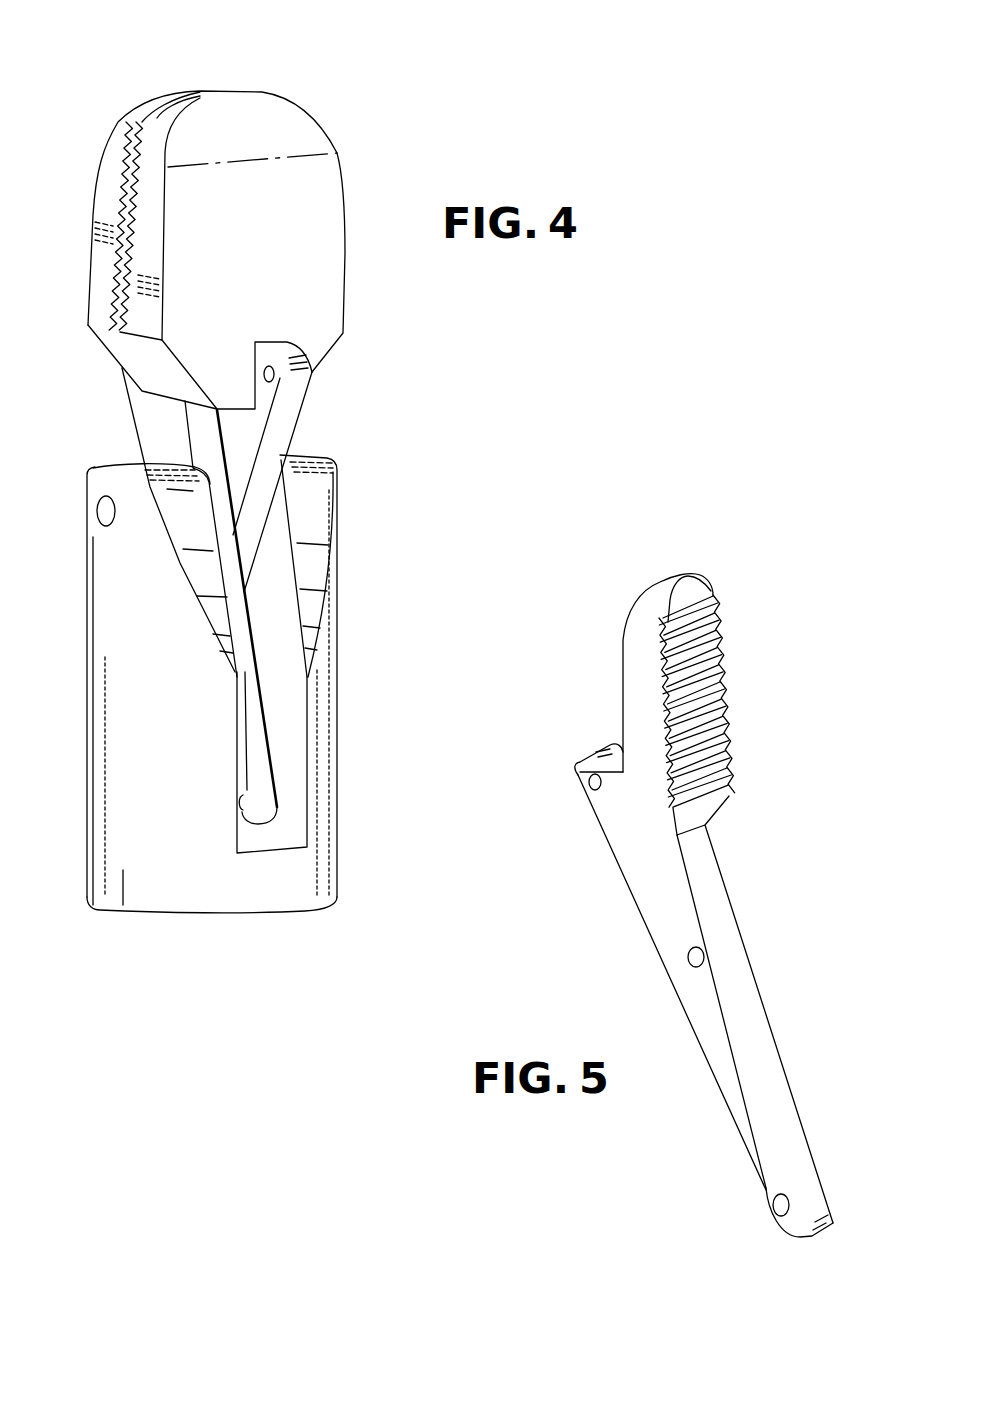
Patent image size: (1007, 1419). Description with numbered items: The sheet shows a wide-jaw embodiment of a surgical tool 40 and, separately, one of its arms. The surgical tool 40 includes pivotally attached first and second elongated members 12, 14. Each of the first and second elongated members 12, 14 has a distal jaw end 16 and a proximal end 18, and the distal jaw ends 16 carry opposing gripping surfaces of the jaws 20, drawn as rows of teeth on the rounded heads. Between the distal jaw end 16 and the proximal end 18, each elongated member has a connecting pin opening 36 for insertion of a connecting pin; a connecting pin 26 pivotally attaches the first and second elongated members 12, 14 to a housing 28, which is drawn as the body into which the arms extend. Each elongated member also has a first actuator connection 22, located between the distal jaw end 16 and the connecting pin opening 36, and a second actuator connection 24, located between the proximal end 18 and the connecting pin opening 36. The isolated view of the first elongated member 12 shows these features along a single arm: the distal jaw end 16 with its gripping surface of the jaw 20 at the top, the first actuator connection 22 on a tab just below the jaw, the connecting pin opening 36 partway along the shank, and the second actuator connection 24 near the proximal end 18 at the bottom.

In FIG. 4, the first elongated member 12 is at (297, 438).
In FIG. 5, the first elongated member 12 is at (630, 904).
In FIG. 4, the second elongated member 14 is at (133, 443).
In FIG. 4, the distal jaw end 16 is at (138, 108).
In FIG. 5, the distal jaw end 16 is at (667, 575).
In FIG. 4, the proximal end 18 is at (253, 820).
In FIG. 5, the proximal end 18 is at (808, 1236).
In FIG. 4, the gripping surface of the jaw 20 is at (124, 186).
In FIG. 5, the gripping surface of the jaw 20 is at (727, 655).
In FIG. 4, the first actuator connection 22 is at (276, 376).
In FIG. 5, the first actuator connection 22 is at (590, 788).
In FIG. 4, the second actuator connection 24 is at (240, 803).
In FIG. 5, the second actuator connection 24 is at (776, 1208).
In FIG. 4, the connecting pin 26 is at (104, 514).
In FIG. 4, the housing 28 is at (157, 754).
In FIG. 5, the connecting pin opening 36 is at (703, 957).
In FIG. 4, the surgical tool 40 is at (360, 109).